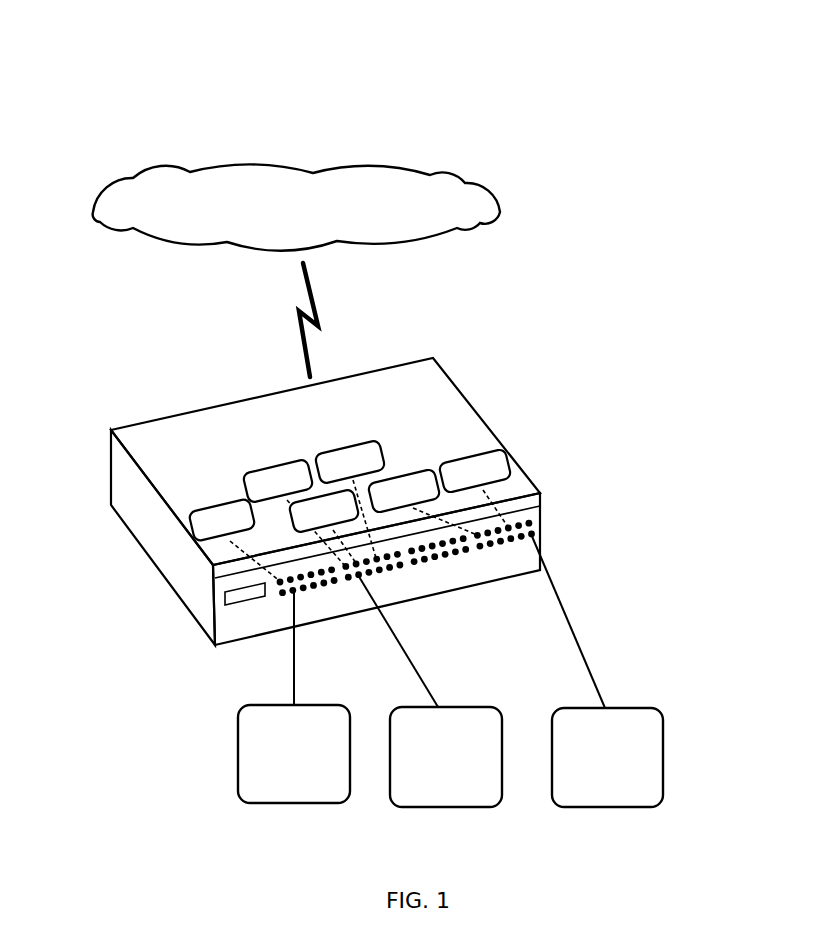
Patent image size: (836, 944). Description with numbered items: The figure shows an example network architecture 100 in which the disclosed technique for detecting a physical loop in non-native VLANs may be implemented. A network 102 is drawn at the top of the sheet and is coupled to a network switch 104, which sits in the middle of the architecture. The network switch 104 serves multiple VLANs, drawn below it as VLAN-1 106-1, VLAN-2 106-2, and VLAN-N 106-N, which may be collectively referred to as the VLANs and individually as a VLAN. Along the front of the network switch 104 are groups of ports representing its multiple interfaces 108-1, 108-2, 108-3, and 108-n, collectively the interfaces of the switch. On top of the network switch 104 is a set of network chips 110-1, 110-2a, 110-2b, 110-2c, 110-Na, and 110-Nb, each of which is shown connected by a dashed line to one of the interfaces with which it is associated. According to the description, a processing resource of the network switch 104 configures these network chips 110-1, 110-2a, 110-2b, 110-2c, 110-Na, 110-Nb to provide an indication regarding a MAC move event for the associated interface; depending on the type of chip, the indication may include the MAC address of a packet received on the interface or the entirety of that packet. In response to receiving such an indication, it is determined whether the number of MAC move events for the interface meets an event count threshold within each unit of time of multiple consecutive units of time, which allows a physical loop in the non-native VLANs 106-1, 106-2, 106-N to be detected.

The network architecture 100 is at (108, 54).
The network 102 is at (284, 227).
The network switch 104 is at (325, 501).
The VLAN 106-1 is at (272, 778).
The VLAN 106-2 is at (424, 779).
The VLAN 106-N is at (583, 778).
The interface 108-1 is at (308, 593).
The interface 108-2 is at (378, 575).
The interface 108-3 is at (439, 561).
The interface 108-n is at (504, 546).
The network chip 110-1 is at (234, 540).
The network chip 110-2a is at (293, 512).
The network chip 110-2b is at (349, 499).
The network chip 110-2c is at (323, 526).
The network chip 110-Na is at (422, 502).
The VLAN configuration 110-Nb is at (474, 488).